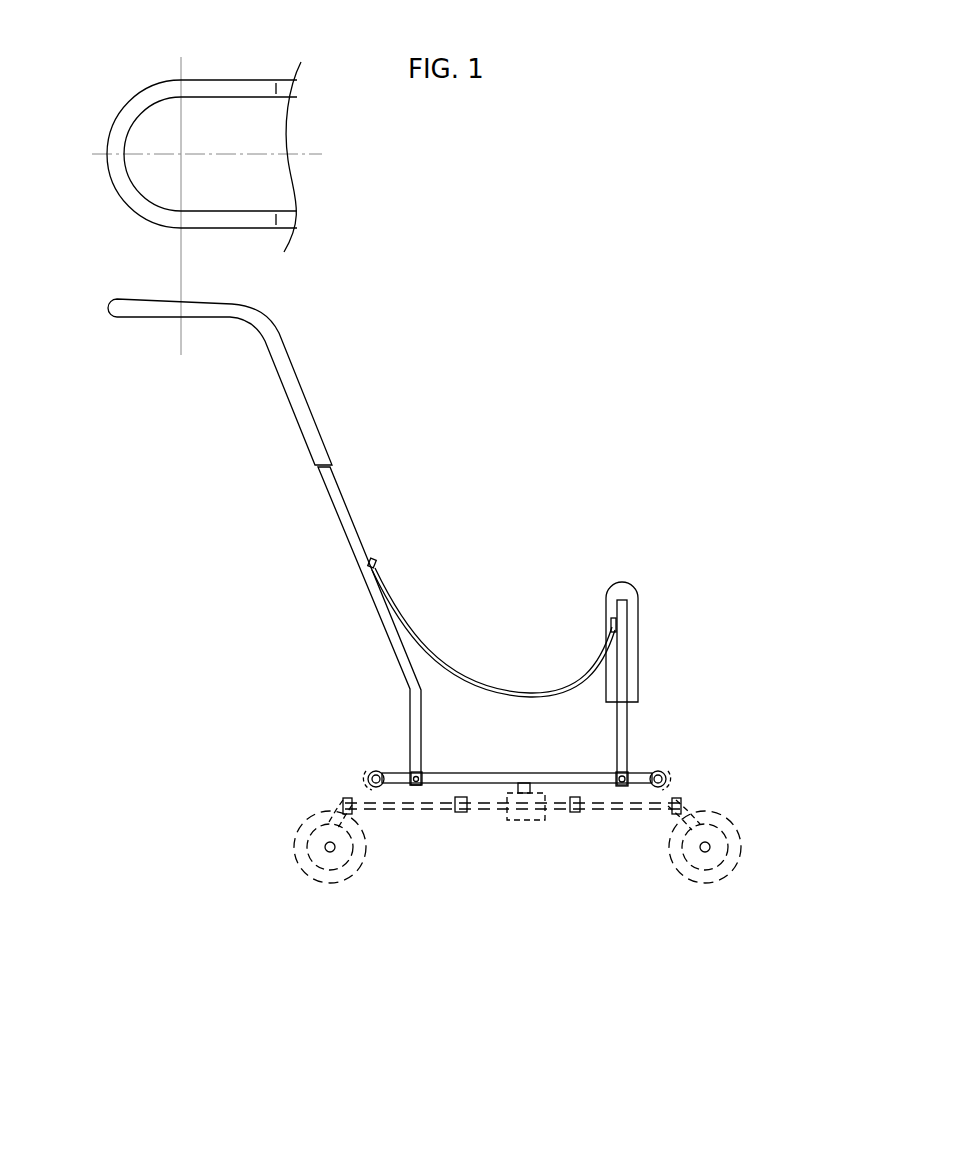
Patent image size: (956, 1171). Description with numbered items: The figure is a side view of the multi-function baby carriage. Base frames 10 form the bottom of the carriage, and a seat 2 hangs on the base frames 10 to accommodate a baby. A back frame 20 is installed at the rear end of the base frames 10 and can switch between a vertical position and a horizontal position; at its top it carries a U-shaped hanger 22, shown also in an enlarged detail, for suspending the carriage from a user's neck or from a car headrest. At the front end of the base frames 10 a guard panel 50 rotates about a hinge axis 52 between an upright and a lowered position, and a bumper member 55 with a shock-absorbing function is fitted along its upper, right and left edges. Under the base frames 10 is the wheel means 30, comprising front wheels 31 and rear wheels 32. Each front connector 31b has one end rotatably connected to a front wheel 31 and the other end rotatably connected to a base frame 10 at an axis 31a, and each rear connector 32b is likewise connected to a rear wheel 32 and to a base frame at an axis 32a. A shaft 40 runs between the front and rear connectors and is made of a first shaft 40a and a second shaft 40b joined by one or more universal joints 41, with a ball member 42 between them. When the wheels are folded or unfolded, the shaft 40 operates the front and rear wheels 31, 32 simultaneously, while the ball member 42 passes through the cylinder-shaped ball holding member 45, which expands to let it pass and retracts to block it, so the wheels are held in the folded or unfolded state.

The seat 2 is at (458, 668).
The base frames 10 is at (547, 773).
The back frame 20 is at (357, 466).
The U-shaped hanger 22 is at (130, 114).
The wheel means 30 is at (312, 850).
The front wheels 31 is at (730, 870).
The axis 31a is at (668, 777).
The front connectors 31b is at (682, 803).
The rear wheels 32 is at (330, 902).
The axis 32a is at (375, 770).
The rear connectors 32b is at (340, 796).
The shaft 40 is at (513, 826).
The first shaft 40a is at (612, 812).
The second shaft 40b is at (405, 812).
The universal joints 41 is at (545, 790).
The ball member 42 is at (461, 814).
The ball holding member 45 is at (528, 822).
The guard panel 50 is at (665, 651).
The hinge axis 52 is at (628, 772).
The bumper member 55 is at (620, 586).